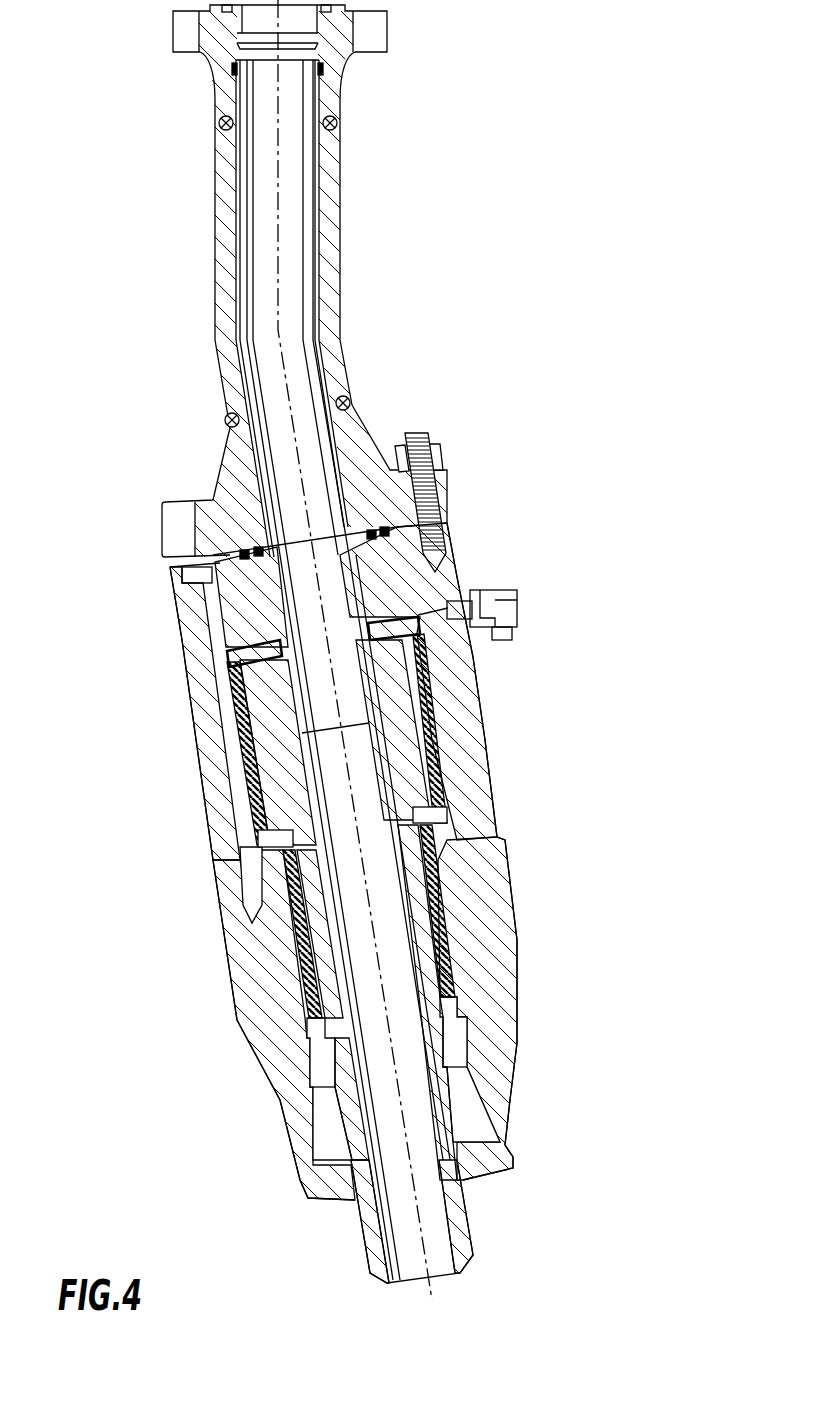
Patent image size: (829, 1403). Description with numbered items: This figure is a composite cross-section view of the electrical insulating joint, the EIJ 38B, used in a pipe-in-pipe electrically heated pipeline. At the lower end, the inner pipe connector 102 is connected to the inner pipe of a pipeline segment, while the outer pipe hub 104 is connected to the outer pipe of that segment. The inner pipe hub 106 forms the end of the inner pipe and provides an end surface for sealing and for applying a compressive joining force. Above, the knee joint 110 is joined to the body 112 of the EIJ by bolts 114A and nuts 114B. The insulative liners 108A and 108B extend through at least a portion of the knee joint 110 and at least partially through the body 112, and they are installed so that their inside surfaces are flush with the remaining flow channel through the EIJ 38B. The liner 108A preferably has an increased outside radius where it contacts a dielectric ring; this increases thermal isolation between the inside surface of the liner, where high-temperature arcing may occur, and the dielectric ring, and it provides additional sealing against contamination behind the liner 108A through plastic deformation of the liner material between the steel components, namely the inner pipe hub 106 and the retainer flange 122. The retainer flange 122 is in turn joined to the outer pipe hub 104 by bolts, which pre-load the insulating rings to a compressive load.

The EIJ 38B is at (556, 131).
The inner pipe connector 102 is at (463, 1222).
The outer pipe hub 104 is at (510, 967).
The inner pipe hub 106 is at (398, 706).
The insulative liner 108A is at (432, 668).
The insulative liner 108B is at (320, 267).
The knee joint 110 is at (222, 283).
The body 112 is at (188, 839).
The bolts 114A is at (446, 485).
The nuts 114B is at (441, 447).
The retainer flange 122 is at (475, 752).